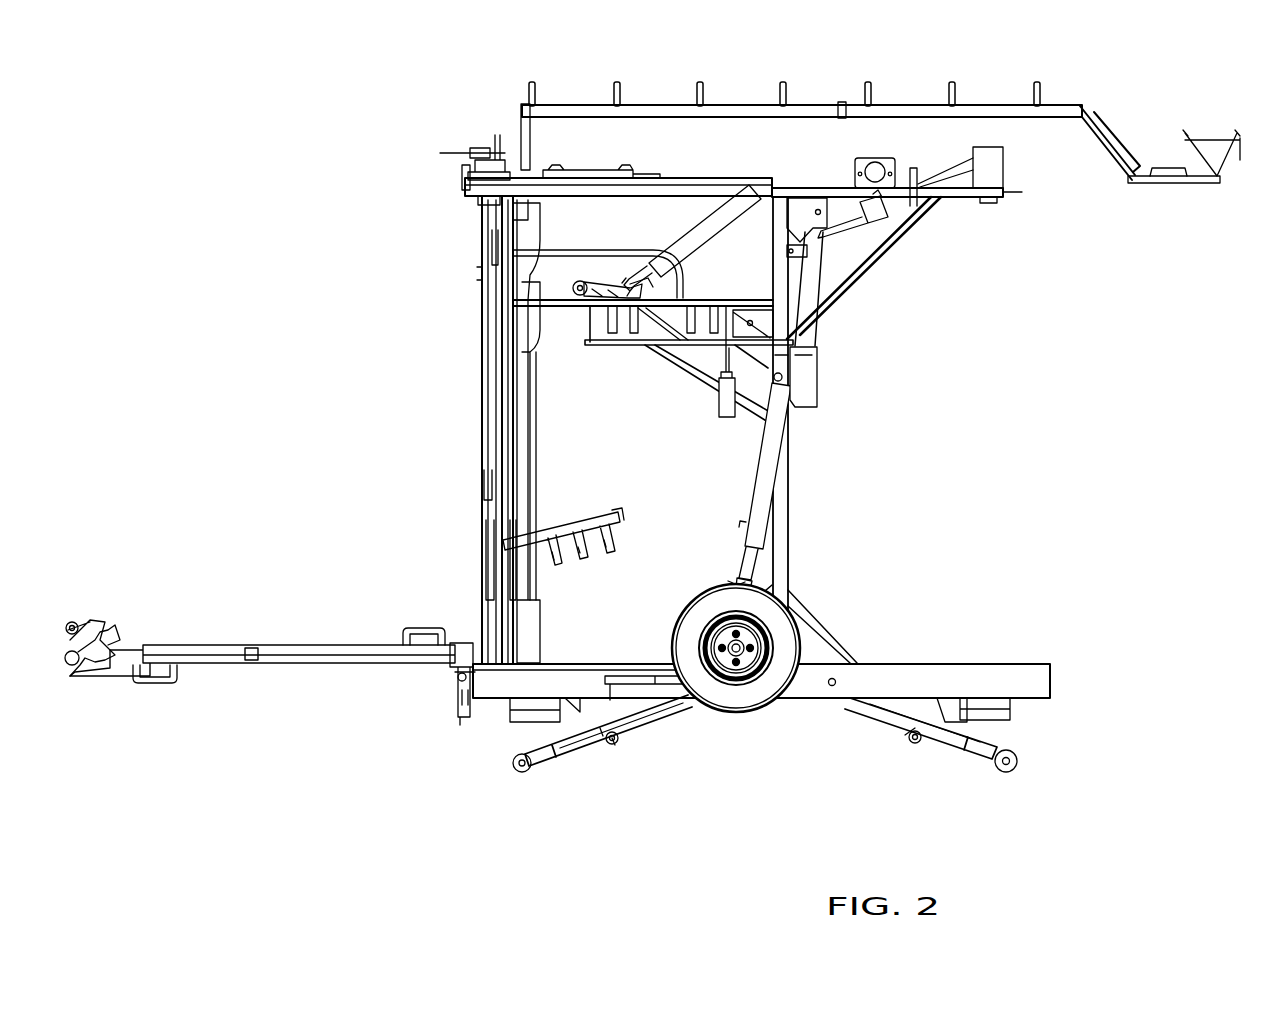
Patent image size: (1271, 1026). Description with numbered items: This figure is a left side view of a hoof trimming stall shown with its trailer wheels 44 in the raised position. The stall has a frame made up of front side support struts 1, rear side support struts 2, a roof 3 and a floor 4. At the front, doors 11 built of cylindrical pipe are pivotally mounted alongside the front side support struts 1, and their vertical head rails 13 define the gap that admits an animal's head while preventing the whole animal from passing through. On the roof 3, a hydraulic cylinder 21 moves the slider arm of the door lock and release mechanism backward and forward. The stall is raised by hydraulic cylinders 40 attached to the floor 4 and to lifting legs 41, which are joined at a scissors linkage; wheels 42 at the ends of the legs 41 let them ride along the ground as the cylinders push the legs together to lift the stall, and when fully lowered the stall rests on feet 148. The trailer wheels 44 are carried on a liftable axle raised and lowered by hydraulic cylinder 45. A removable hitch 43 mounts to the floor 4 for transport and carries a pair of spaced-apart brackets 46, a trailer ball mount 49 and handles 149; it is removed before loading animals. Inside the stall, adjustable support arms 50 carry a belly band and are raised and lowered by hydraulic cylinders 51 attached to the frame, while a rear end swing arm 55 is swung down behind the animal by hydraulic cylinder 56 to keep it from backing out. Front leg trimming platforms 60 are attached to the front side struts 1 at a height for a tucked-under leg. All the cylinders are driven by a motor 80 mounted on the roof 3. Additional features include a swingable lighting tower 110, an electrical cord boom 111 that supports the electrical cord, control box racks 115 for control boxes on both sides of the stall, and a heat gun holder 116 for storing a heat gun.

The front side support strut 1 is at (520, 381).
The rear side support strut 2 is at (780, 560).
The roof 3 is at (742, 178).
The floor 4 is at (1045, 680).
The door 11 is at (485, 472).
The head rail 13 is at (525, 418).
The hydraulic cylinder 21 is at (600, 172).
The hydraulic cylinder 40 is at (537, 740).
The lifting leg 41 is at (630, 713).
The wheel 42 is at (527, 772).
The removable hitch 43 is at (282, 645).
The trailer wheel 44 is at (735, 698).
The hydraulic cylinder 45 is at (757, 512).
The bracket 46 is at (468, 640).
The trailer ball mount 49 is at (133, 640).
The adjustable support arm 50 is at (598, 282).
The hydraulic cylinder 51 is at (712, 228).
The rear end swing arm 55 is at (805, 386).
The hydraulic cylinder 56 is at (884, 208).
The front leg trimming platform 60 is at (568, 528).
The motor 80 is at (884, 163).
The swingable lighting tower 110 is at (1220, 180).
The electrical cord boom 111 is at (731, 106).
The control box rack 115 is at (642, 350).
The heat gun holder 116 is at (730, 400).
The foot 148 is at (510, 712).
The handle 149 is at (155, 684).